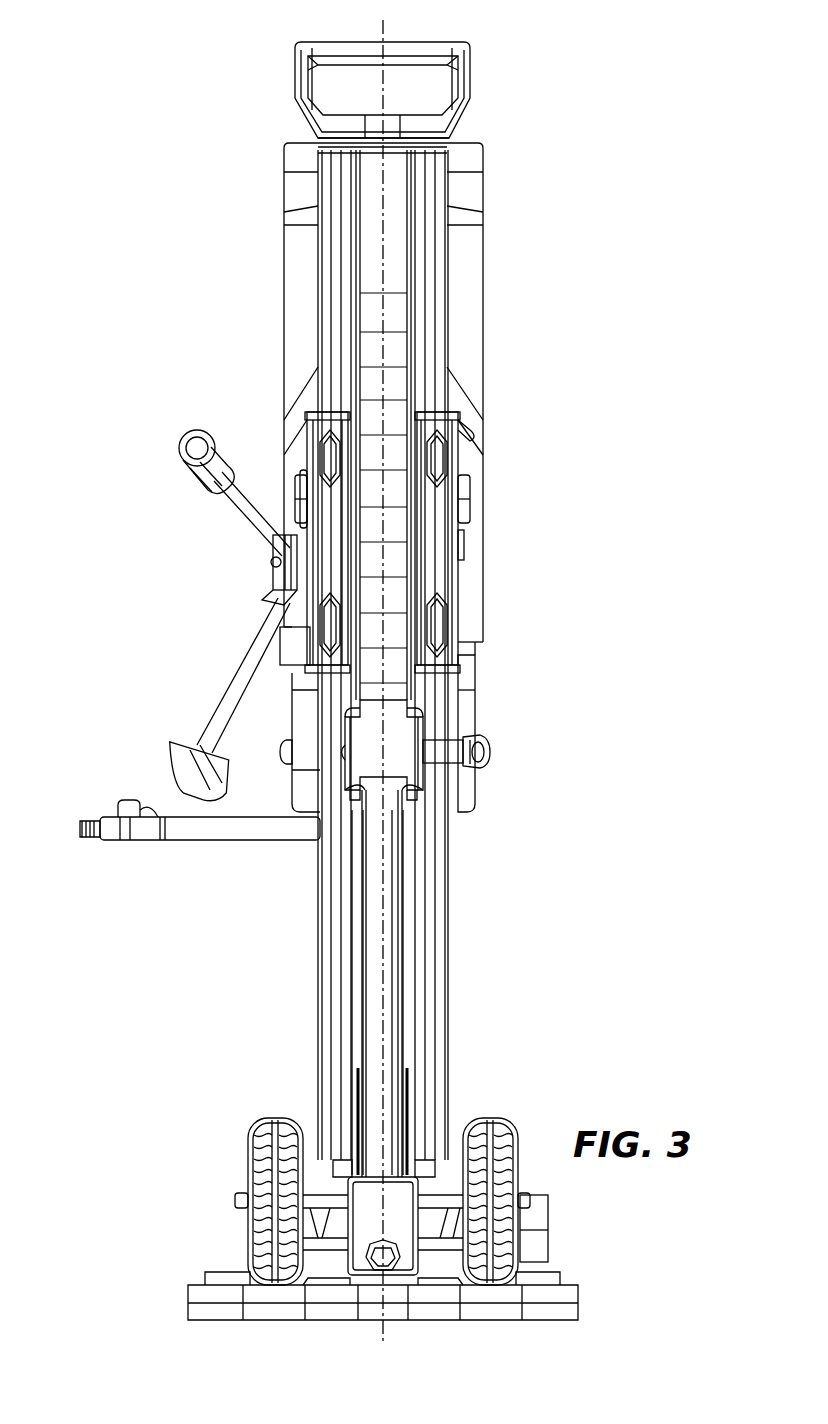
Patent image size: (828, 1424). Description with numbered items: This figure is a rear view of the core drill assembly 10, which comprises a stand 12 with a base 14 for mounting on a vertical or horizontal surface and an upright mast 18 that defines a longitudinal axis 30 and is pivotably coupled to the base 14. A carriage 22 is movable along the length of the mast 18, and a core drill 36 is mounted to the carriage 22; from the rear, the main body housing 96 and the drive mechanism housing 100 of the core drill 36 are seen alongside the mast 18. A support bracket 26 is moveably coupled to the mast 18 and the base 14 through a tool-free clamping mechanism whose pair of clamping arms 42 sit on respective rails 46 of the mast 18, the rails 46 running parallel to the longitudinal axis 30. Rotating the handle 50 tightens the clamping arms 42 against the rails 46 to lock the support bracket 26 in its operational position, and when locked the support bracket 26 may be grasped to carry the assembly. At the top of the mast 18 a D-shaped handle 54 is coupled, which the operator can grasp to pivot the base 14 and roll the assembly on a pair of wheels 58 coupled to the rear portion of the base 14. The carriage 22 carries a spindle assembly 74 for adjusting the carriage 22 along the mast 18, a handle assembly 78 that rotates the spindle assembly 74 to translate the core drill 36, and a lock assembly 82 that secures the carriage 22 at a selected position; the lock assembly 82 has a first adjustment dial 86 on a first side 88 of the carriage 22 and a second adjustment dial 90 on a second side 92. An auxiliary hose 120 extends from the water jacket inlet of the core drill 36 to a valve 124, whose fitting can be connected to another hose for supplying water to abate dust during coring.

The core drill assembly 10 is at (612, 185).
The stand 12 is at (576, 637).
The base 14 is at (242, 1283).
The mast 18 is at (408, 205).
The carriage 22 is at (432, 525).
The support bracket 26 is at (395, 923).
The longitudinal axis 30 is at (300, 91).
The core drill 36 is at (460, 326).
The clamping arms 42 is at (350, 790).
The rails 46 is at (354, 286).
The handle 50 is at (490, 752).
The handle 54 is at (442, 55).
The wheels 58 is at (258, 1122).
The spindle assembly 74 is at (272, 572).
The handle assembly 78 is at (197, 440).
The lock assembly 82 is at (513, 512).
The first adjustment dial 86 is at (300, 498).
The first side 88 is at (315, 410).
The second adjustment dial 90 is at (465, 498).
The second side 92 is at (452, 590).
The main body housing 96 is at (483, 406).
The drive mechanism housing 100 is at (462, 688).
The auxiliary hose 120 is at (222, 832).
The valve 124 is at (130, 803).